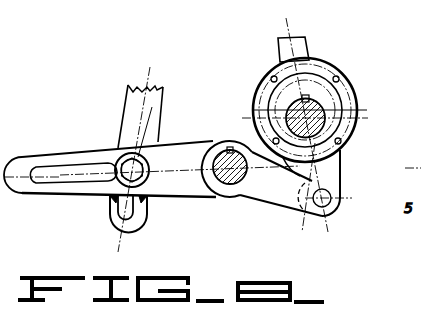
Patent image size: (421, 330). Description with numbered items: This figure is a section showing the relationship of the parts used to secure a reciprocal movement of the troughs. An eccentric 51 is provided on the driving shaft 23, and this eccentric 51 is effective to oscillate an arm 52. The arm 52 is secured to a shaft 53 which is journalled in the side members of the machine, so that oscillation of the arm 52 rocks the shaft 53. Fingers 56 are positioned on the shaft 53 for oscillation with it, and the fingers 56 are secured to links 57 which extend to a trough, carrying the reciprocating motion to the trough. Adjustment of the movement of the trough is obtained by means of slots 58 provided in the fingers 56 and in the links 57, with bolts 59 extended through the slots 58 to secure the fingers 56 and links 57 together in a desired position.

The eccentric 51 is at (333, 90).
The driving shaft 23 is at (322, 120).
The arm 52 is at (281, 197).
The shaft 53 is at (226, 196).
The fingers 56 is at (70, 155).
The links 57 is at (132, 99).
The slots 58 is at (117, 203).
The bolts 59 is at (146, 160).